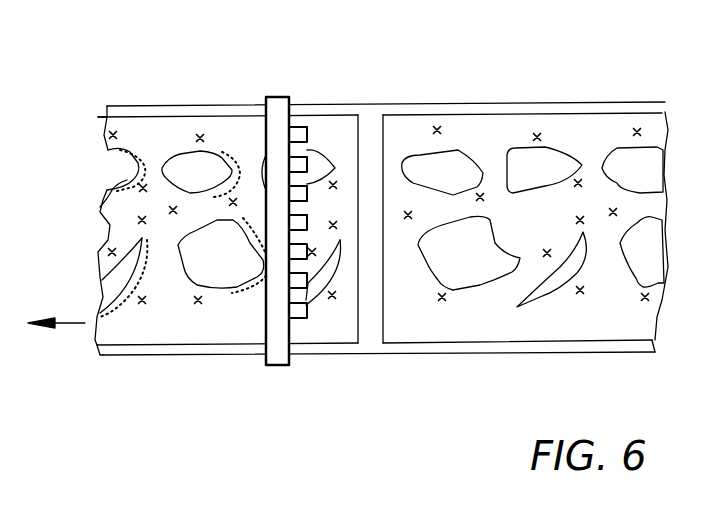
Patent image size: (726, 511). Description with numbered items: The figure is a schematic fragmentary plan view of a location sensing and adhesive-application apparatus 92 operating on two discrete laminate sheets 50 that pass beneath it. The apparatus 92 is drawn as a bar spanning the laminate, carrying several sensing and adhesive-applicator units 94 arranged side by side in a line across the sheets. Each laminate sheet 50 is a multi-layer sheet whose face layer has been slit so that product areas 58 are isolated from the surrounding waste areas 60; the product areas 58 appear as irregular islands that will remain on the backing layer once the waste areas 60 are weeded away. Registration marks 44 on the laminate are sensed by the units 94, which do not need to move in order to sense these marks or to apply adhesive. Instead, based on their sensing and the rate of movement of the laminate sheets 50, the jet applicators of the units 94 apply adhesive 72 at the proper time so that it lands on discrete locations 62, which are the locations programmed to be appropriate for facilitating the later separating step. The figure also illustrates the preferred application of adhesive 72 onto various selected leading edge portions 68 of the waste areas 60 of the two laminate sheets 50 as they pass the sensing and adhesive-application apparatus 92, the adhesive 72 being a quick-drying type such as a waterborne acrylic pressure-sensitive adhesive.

The registration marks 44 is at (443, 307).
The laminate sheet 50 is at (155, 153).
The product areas 58 is at (185, 163).
The waste areas 60 is at (168, 312).
The discrete locations 62 is at (185, 233).
The leading edge portions 68 is at (126, 190).
The adhesive 72 is at (227, 153).
The location sensing and adhesive-application apparatus 92 is at (280, 110).
The sensing and adhesive-applicator units 94 is at (300, 137).